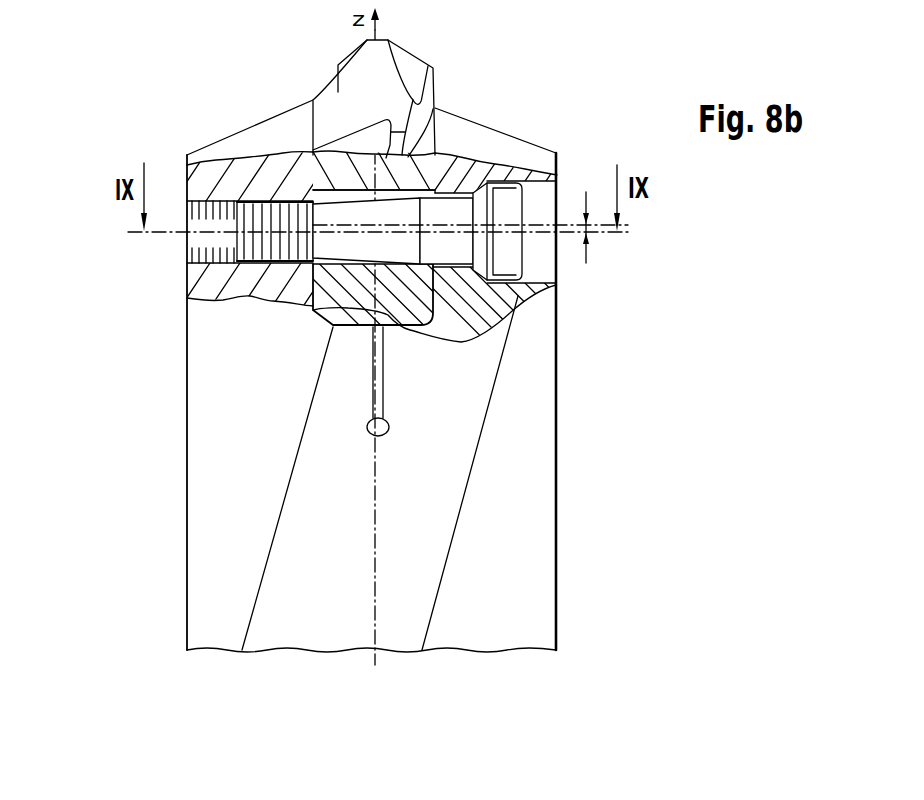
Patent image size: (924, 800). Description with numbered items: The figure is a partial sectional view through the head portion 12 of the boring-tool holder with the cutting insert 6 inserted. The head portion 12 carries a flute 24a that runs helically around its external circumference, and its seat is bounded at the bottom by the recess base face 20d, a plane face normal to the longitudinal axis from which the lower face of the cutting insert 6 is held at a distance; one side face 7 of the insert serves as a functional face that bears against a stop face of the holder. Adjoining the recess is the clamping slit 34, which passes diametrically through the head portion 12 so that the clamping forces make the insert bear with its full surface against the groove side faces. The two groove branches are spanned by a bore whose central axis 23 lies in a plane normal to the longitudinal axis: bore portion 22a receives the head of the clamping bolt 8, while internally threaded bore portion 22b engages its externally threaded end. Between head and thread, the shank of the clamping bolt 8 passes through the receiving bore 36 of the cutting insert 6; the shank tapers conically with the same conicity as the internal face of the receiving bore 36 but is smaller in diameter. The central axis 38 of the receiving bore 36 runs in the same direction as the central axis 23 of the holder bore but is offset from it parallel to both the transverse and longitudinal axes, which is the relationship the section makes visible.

The cutting insert 6 is at (437, 78).
The side face 7 is at (410, 312).
The clamping bolt 8 is at (343, 212).
The head portion 12 is at (557, 552).
The recess base face 20d is at (315, 308).
The bore portion 22a is at (433, 272).
The bore portion 22b is at (225, 203).
The central axis 23 is at (565, 233).
The flute 24a is at (410, 493).
The clamping slit 34 is at (388, 397).
The receiving bore 36 is at (406, 192).
The central axis 38 is at (566, 232).